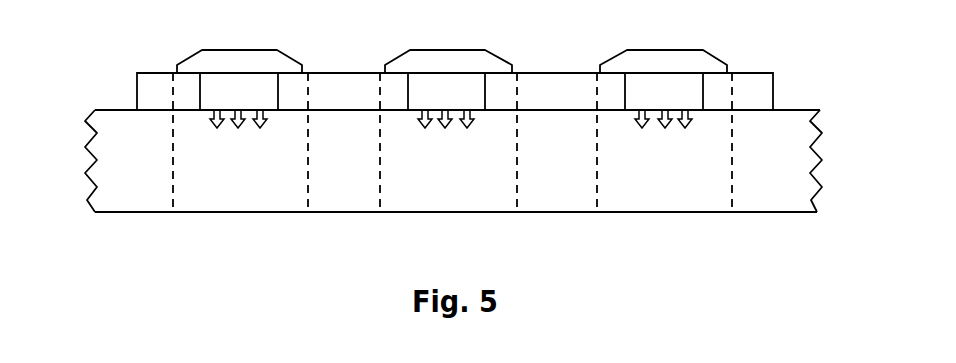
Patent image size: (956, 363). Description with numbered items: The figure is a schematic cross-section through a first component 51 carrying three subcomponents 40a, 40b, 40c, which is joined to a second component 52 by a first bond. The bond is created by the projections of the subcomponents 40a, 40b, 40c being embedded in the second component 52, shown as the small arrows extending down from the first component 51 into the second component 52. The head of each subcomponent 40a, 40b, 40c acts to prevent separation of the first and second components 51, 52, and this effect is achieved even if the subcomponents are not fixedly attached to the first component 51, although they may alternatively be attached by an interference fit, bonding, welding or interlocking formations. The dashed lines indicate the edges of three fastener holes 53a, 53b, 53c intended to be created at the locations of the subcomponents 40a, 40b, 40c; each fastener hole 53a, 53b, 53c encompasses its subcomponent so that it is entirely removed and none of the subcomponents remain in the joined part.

The subcomponent 40a is at (237, 65).
The subcomponent 40b is at (447, 65).
The subcomponent 40c is at (665, 65).
The first component 51 is at (150, 92).
The second component 52 is at (147, 190).
The fastener hole 53a is at (177, 222).
The fastener hole 53b is at (383, 222).
The fastener hole 53c is at (602, 222).